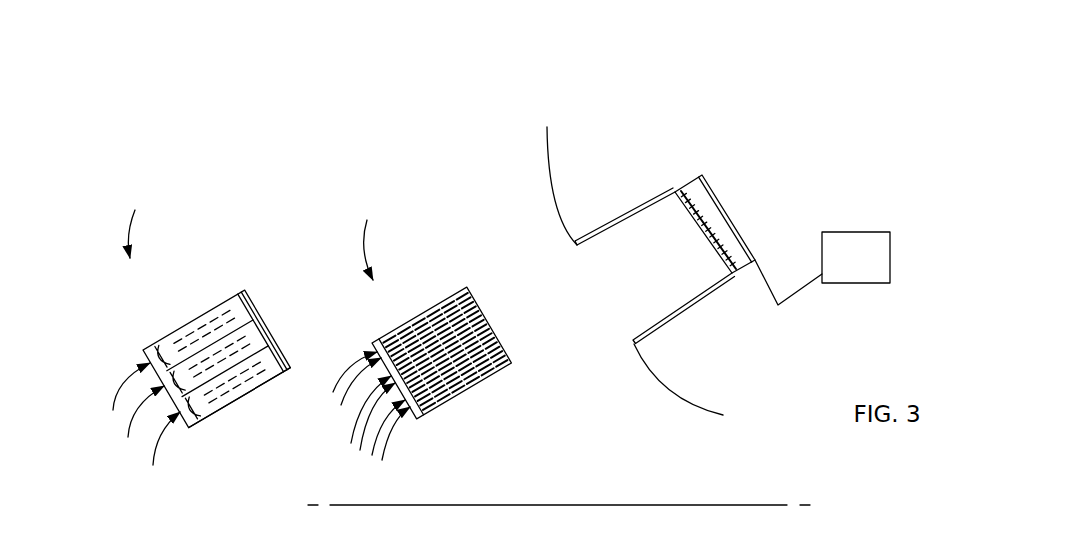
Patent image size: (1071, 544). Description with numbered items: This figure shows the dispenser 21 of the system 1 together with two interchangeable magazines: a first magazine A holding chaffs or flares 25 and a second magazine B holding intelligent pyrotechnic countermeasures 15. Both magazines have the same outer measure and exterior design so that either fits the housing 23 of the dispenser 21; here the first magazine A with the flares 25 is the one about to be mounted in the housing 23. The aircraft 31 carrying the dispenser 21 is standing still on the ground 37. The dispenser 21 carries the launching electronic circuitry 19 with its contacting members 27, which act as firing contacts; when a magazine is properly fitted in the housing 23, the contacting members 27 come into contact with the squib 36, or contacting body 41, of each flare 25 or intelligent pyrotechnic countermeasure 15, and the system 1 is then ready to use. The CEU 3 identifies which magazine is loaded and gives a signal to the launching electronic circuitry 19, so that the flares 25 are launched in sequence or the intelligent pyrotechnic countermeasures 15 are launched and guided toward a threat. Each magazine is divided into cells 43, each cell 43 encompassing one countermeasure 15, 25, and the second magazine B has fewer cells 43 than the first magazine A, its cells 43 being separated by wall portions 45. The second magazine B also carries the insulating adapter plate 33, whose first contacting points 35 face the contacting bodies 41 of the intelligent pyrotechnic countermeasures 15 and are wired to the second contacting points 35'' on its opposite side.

The system 1 is at (392, 95).
The CEU 3 is at (851, 232).
The intelligent pyrotechnic countermeasure 15 is at (162, 345).
The launching electronic circuitry 19 is at (708, 182).
The dispenser 21 is at (658, 327).
The housing 23 is at (612, 313).
The flares 25 is at (425, 312).
The contacting members 27 is at (676, 190).
The aircraft 31 is at (560, 214).
The adapter plate 33 is at (234, 293).
The first contacting point 35 is at (227, 289).
The second contacting point 35'' is at (280, 254).
The squib 36 is at (237, 300).
The ground 37 is at (591, 505).
The contacting body 41 is at (243, 322).
The cells 43 is at (253, 421).
The wall portions 45 is at (223, 413).